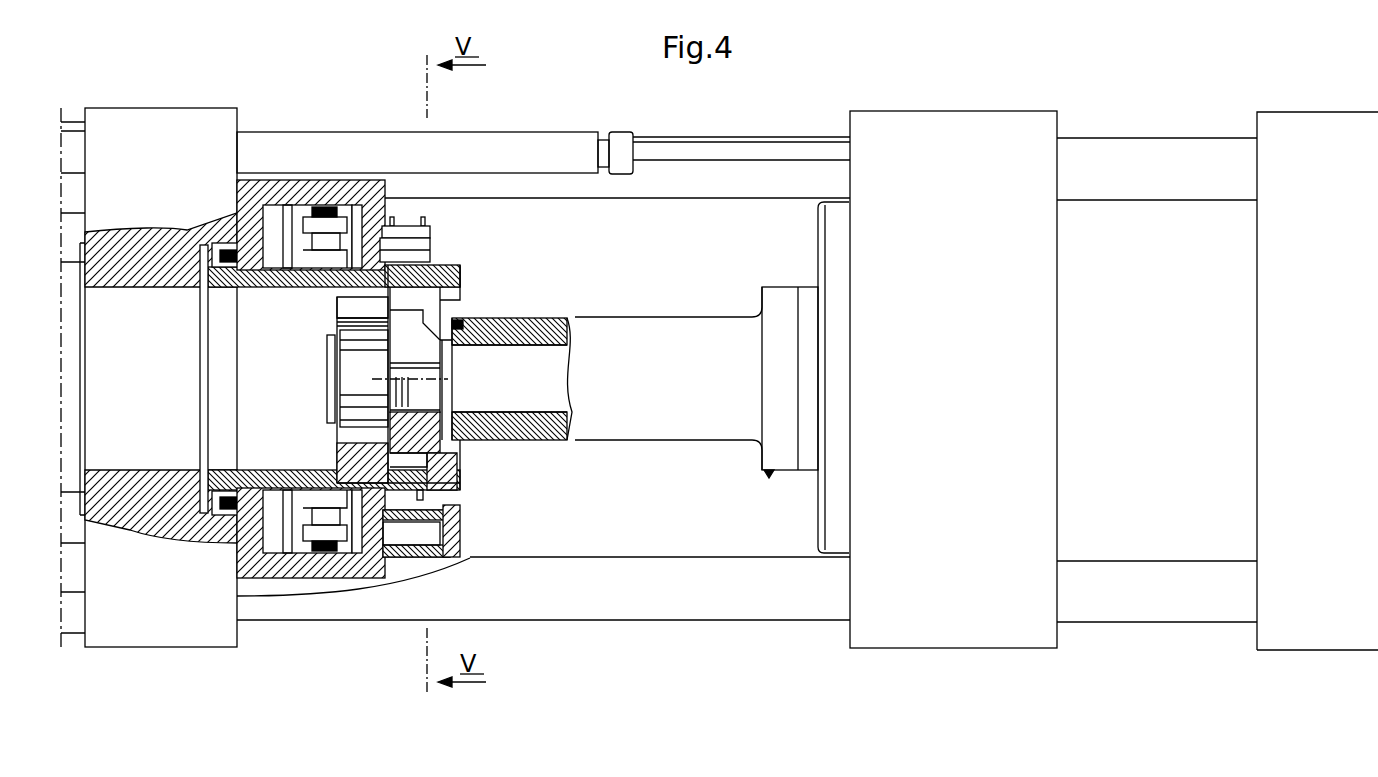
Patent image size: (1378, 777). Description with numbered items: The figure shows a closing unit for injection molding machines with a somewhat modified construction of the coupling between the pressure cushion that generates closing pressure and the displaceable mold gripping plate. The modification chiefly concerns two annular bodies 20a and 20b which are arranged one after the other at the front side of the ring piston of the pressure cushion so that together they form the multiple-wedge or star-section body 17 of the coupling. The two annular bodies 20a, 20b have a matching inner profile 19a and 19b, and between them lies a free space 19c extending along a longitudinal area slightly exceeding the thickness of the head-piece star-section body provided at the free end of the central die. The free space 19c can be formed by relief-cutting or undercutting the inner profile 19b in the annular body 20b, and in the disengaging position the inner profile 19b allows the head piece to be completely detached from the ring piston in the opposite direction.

The multiple-wedge or star-section body 17 is at (447, 492).
The inner profile 19a is at (357, 298).
The inner profile 19b is at (443, 297).
The free space 19c is at (430, 264).
The annular body 20a is at (357, 307).
The annular body 20b is at (457, 264).